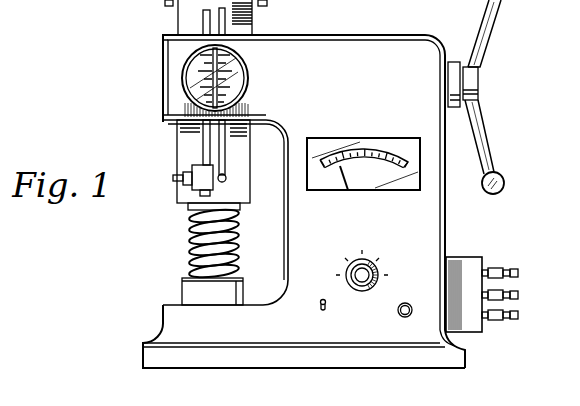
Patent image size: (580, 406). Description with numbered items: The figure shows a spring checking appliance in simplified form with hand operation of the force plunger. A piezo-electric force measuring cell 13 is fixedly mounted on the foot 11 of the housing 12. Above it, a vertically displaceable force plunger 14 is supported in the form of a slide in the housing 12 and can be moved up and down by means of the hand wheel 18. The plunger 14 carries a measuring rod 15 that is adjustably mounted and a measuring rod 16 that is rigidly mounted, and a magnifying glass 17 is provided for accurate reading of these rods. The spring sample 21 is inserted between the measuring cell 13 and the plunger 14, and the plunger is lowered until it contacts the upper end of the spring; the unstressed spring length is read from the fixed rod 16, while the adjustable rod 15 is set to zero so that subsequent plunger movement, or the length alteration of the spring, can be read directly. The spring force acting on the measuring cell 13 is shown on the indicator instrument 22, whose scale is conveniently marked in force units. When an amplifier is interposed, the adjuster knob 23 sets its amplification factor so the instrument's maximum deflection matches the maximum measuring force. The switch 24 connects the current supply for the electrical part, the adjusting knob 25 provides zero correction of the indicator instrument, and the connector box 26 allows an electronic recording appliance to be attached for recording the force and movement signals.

The foot 11 is at (152, 354).
The housing 12 is at (399, 60).
The piezo-electric force measuring cell 13 is at (190, 290).
The force plunger 14 is at (192, 194).
The measuring rod 15 is at (205, 148).
The measuring rod 16 is at (224, 156).
The magnifying glass 17 is at (183, 78).
The hand wheel 18 is at (488, 150).
The spring sample 21 is at (189, 246).
The indicator instrument 22 is at (373, 148).
The adjuster knob 23 is at (362, 280).
The switch 24 is at (323, 311).
The adjusting knob 25 is at (404, 317).
The connector box 26 is at (468, 270).